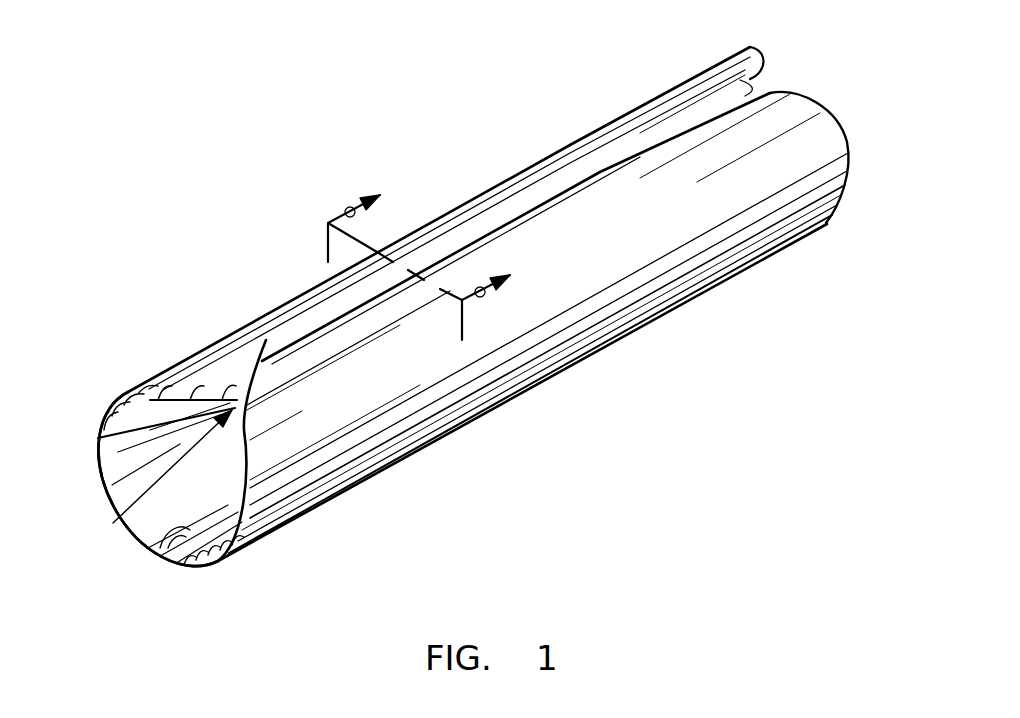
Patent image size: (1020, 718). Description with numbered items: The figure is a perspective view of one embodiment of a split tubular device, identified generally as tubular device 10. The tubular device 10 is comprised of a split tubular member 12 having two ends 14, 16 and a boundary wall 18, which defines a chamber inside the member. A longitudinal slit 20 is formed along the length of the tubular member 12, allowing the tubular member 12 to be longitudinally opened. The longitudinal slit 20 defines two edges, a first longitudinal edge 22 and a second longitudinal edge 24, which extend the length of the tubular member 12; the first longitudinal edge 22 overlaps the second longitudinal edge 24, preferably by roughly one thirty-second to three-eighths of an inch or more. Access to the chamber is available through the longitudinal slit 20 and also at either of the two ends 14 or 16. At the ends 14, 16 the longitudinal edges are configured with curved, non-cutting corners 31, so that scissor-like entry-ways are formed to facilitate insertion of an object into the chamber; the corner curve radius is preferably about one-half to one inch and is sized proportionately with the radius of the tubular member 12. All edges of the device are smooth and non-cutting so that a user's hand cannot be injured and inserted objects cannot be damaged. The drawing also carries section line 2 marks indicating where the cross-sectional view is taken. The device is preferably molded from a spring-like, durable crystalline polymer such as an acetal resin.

The tubular device 10 is at (162, 262).
The split tubular member 12 is at (650, 278).
The end 14 is at (793, 93).
The end 16 is at (150, 543).
The boundary wall 18 is at (523, 198).
The longitudinal slit 20 is at (253, 385).
The first longitudinal edge 22 is at (292, 368).
The second longitudinal edge 24 is at (98, 438).
The curved, non-cutting corners 31 is at (765, 80).
The section line 2- 2 is at (405, 268).